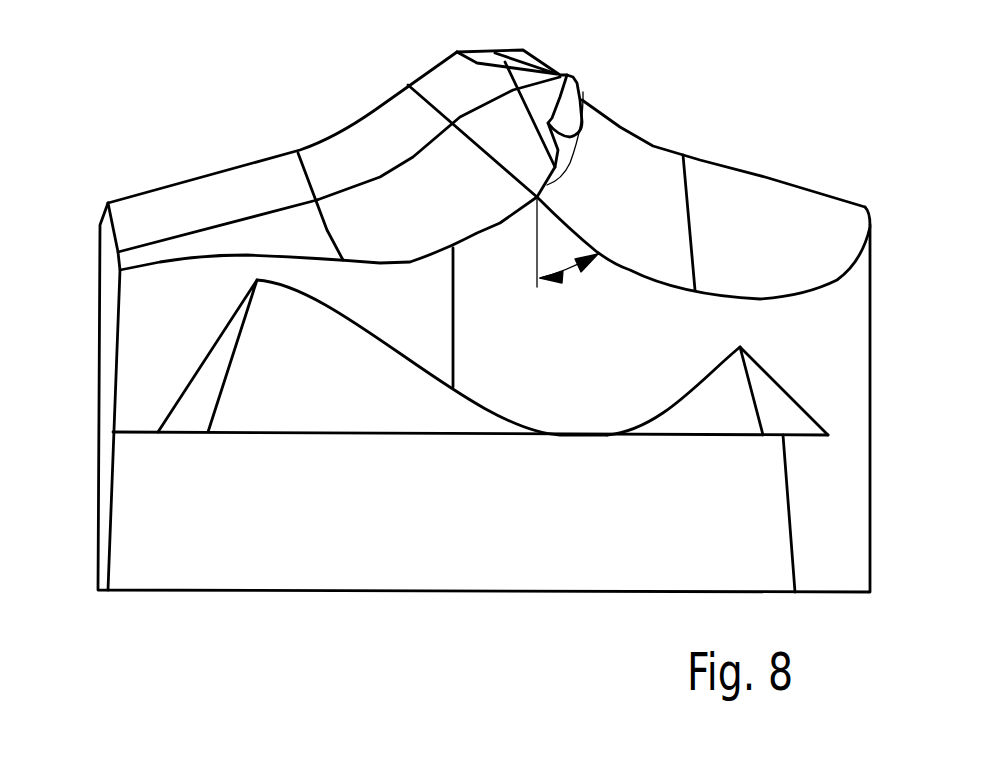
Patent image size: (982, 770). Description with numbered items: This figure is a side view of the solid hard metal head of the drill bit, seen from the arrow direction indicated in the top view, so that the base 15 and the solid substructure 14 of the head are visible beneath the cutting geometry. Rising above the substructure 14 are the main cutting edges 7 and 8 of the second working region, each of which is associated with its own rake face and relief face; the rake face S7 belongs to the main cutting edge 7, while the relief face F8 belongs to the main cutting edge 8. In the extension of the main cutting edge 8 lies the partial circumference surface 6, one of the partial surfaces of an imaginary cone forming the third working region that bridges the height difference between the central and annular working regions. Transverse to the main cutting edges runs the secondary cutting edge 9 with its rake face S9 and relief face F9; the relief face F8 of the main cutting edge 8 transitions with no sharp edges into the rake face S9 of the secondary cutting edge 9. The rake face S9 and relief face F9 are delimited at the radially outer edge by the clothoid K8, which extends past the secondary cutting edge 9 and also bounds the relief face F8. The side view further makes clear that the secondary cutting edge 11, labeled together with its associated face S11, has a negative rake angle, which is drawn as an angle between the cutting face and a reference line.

The main cutting edge 7 is at (165, 183).
The rake face S7 is at (147, 215).
The secondary cutting edge 11 is at (440, 57).
The cutting edge of tooth 11 S11 is at (447, 90).
The partial circumference surface 6 is at (568, 112).
The secondary cutting edge 9 is at (622, 188).
The rake face S9 is at (652, 147).
The main cutting edge 8 is at (765, 173).
The relief face F8 is at (793, 232).
The clothoid K8 is at (838, 288).
The solid substructure 14 is at (247, 375).
The relief face F9 is at (417, 212).
The base 15 is at (402, 545).